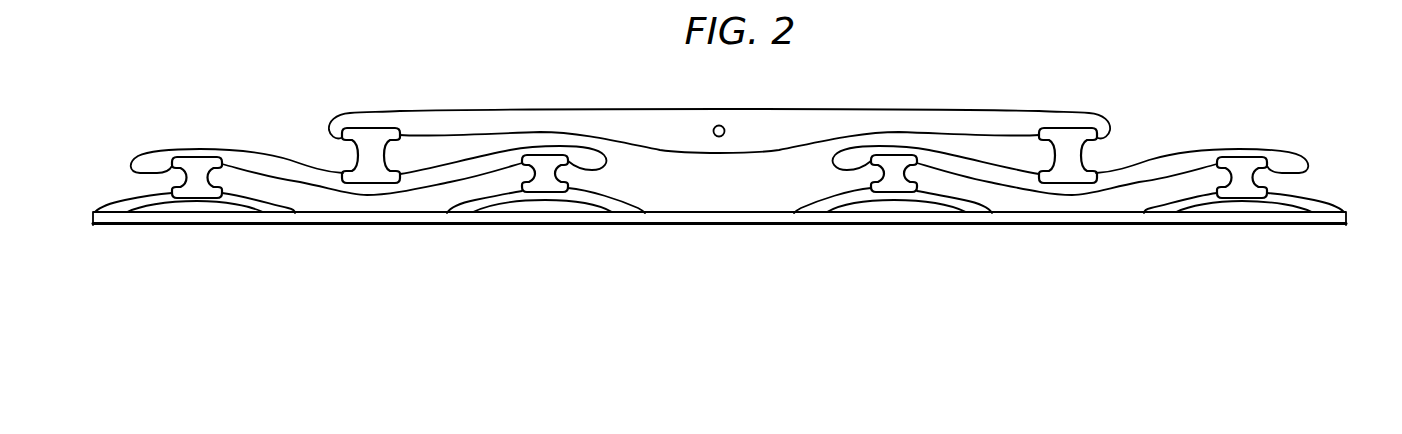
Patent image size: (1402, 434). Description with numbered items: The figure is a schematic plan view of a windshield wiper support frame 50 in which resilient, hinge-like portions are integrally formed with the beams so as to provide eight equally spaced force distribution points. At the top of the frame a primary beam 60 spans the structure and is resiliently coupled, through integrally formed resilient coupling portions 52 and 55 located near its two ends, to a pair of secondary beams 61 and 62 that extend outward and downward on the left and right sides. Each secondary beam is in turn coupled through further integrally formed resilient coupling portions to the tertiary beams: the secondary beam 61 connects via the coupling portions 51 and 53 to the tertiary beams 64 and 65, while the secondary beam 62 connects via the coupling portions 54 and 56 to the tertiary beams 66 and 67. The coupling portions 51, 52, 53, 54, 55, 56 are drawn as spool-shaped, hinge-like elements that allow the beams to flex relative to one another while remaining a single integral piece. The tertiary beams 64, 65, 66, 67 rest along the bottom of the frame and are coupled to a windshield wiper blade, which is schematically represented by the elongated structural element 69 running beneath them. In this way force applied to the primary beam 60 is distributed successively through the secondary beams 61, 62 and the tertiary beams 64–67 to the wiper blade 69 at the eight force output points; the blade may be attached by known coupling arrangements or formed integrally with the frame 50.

The windshield wiper support frame 50 is at (705, 281).
The resilient coupling portion 51 is at (196, 160).
The resilient coupling portion 52 is at (367, 142).
The resilient coupling portion 53 is at (543, 188).
The resilient coupling portion 54 is at (890, 187).
The resilient coupling portion 55 is at (1077, 138).
The resilient coupling portion 56 is at (1242, 164).
The primary beam 60 is at (798, 124).
The secondary beam 61 is at (268, 163).
The secondary beam 62 is at (1157, 172).
The tertiary beam 64 is at (120, 207).
The tertiary beam 65 is at (472, 207).
The tertiary beam 66 is at (971, 206).
The tertiary beam 67 is at (1186, 210).
The windshield wiper blade 69 is at (1073, 227).